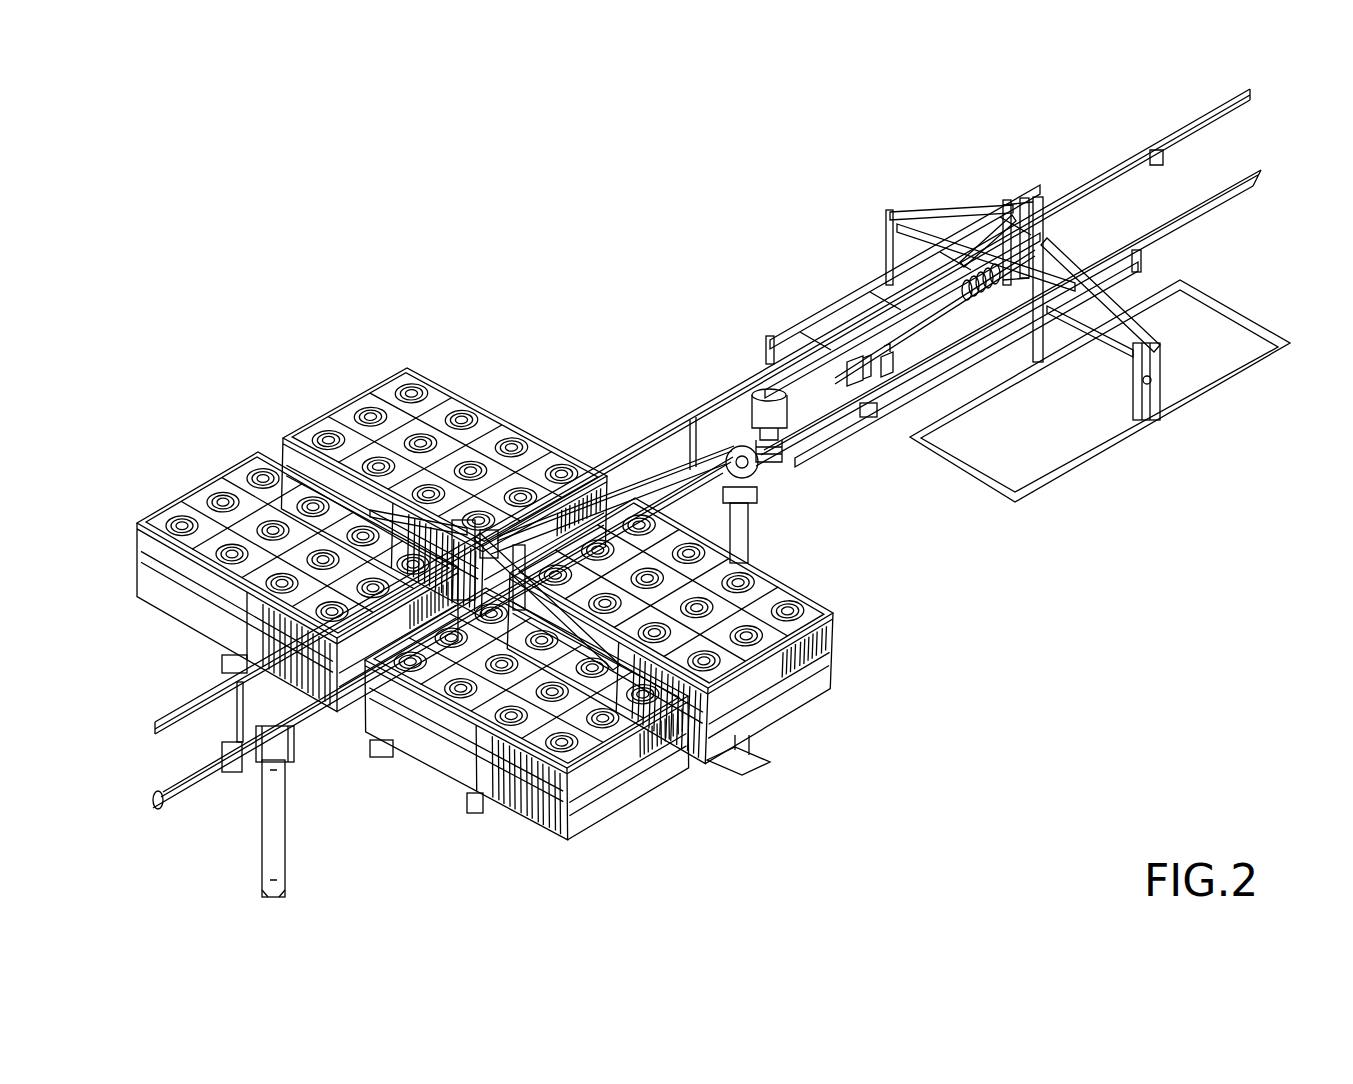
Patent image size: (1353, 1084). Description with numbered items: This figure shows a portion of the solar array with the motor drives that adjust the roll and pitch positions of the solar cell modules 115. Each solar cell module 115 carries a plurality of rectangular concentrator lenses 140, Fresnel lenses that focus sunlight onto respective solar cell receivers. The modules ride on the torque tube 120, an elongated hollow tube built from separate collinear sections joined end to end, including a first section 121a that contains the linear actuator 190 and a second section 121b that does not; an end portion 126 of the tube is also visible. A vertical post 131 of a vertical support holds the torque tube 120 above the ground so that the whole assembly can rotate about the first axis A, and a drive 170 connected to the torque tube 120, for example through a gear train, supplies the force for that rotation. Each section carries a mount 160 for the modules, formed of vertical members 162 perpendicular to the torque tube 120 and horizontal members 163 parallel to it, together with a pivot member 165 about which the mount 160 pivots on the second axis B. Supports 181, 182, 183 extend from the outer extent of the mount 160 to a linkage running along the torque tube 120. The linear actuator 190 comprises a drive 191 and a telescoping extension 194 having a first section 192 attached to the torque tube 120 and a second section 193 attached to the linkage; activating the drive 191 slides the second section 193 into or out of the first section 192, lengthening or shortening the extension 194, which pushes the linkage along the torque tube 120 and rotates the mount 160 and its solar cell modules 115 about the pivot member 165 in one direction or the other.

The solar cell module 115 is at (187, 497).
The concentrator lens 140 is at (400, 385).
The torque tube 120 is at (203, 793).
The first section 121a is at (805, 422).
The second section 121b is at (305, 720).
The guide rail 126 is at (1043, 223).
The vertical post 131 is at (288, 827).
The mount 160 is at (797, 332).
The vertical member 162 is at (957, 467).
The horizontal member 163 is at (1072, 462).
The pivot member 165 is at (920, 245).
The drive 170 is at (777, 420).
The support 181 is at (937, 210).
The support 182 is at (1100, 293).
The support 183 is at (1027, 230).
The linear actuator 190 is at (903, 330).
The drive 191 is at (840, 376).
The first section 192 is at (913, 335).
The second section 193 is at (993, 270).
The extension 194 is at (903, 320).